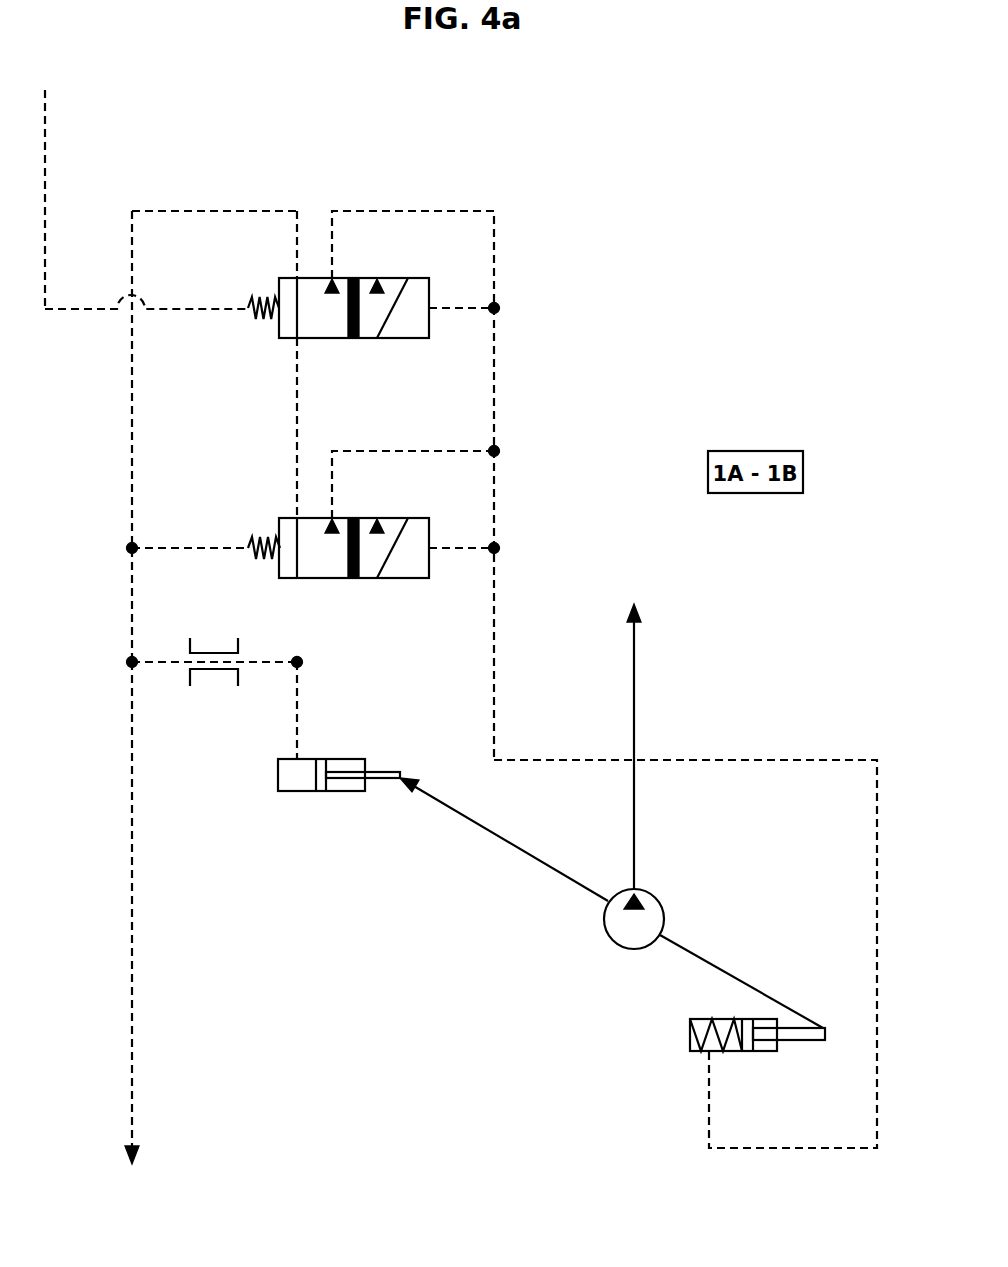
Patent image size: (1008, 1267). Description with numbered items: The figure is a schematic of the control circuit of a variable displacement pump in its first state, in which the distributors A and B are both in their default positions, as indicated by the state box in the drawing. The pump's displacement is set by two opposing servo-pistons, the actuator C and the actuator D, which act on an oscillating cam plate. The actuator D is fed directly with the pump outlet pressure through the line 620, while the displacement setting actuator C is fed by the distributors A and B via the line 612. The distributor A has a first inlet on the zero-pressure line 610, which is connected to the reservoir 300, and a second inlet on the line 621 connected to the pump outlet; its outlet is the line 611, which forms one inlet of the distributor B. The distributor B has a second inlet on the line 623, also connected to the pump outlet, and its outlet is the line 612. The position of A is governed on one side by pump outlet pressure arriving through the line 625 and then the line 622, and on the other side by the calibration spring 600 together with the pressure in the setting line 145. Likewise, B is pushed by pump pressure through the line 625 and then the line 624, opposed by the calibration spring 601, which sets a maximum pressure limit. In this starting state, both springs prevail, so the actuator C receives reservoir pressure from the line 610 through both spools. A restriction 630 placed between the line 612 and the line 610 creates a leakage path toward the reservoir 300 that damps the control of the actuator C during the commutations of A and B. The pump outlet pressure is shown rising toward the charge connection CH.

The setting line 145 is at (86, 309).
The reservoir 300 is at (131, 930).
The calibration spring 600 is at (332, 278).
The calibration spring 601 is at (288, 518).
The zero-pressure line 610 is at (215, 211).
The line 611 is at (297, 410).
The line 612 is at (297, 710).
The line 620 is at (745, 760).
The line 621 is at (415, 211).
The line 622 is at (455, 306).
The line 623 is at (452, 450).
The line 624 is at (452, 547).
The line 625 is at (494, 645).
The restriction 630 is at (214, 636).
The distributor A is at (398, 272).
The distributor B is at (398, 512).
The actuator C is at (346, 757).
The actuator D is at (757, 1055).
The pump/charge line CH is at (611, 803).